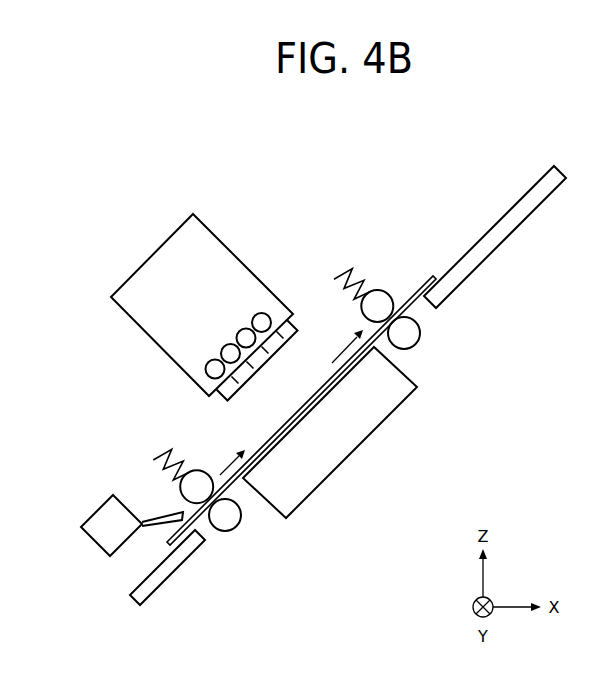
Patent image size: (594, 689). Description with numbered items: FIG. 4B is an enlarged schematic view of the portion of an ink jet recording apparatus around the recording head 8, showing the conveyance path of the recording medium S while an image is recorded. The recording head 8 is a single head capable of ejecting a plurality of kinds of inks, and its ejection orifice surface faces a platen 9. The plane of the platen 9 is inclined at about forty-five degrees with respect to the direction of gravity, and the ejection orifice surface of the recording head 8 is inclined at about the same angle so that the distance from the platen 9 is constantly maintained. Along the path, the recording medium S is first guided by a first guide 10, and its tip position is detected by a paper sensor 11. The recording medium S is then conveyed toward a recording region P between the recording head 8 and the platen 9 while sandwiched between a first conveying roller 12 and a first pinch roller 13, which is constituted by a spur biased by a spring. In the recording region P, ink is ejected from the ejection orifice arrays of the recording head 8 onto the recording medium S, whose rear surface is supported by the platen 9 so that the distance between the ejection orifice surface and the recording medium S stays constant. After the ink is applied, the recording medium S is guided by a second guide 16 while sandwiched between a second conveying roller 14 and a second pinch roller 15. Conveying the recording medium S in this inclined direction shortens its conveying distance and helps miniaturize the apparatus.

The recording head 8 is at (163, 263).
The platen 9 is at (340, 447).
The first guide 10 is at (167, 568).
The paper sensor 11 is at (110, 517).
The first conveying roller 12 is at (235, 523).
The first pinch roller 13 is at (163, 453).
The second conveying roller 14 is at (410, 337).
The second pinch roller 15 is at (343, 270).
The second guide 16 is at (485, 248).
The recording medium S is at (432, 273).
The recording region P is at (264, 369).